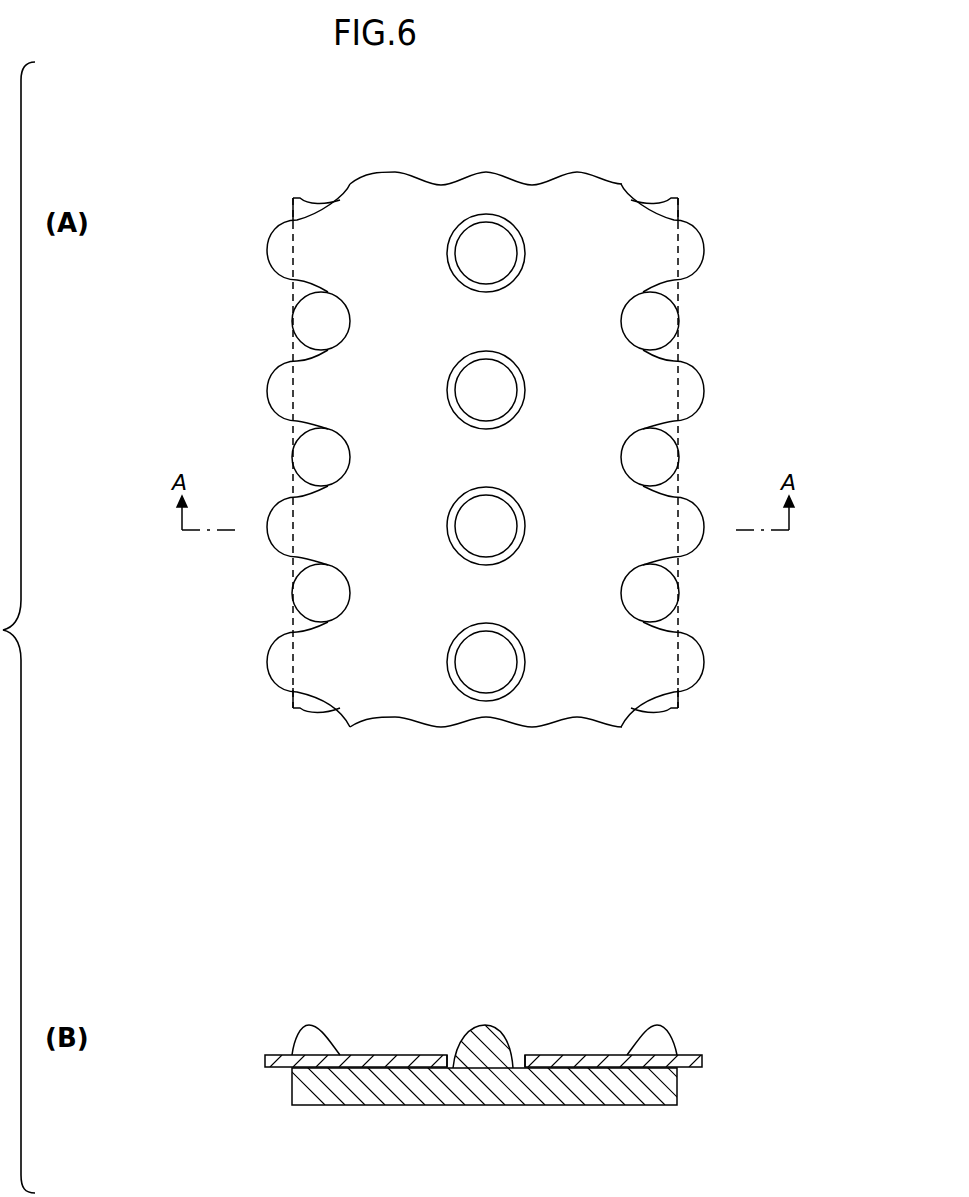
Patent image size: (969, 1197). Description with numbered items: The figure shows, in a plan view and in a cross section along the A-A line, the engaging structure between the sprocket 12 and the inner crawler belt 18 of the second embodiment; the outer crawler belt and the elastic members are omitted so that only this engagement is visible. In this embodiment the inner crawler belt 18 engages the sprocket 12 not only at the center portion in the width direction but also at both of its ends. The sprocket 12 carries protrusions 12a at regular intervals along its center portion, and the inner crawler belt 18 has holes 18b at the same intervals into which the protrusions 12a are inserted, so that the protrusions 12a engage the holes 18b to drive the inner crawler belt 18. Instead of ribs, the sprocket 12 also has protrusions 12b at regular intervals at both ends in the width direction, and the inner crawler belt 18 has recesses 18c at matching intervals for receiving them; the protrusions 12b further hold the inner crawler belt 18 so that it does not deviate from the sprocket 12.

The sprocket 12 is at (297, 565).
The protrusions 12a is at (522, 382).
The protrusions 12b is at (305, 322).
The inner crawler belt 18 is at (660, 253).
The holes 18b is at (527, 252).
The recesses 18c is at (296, 432).